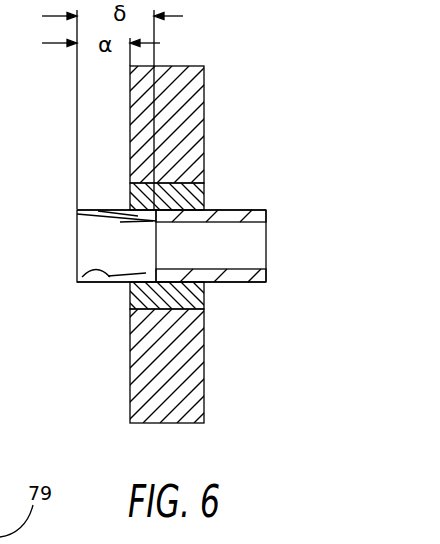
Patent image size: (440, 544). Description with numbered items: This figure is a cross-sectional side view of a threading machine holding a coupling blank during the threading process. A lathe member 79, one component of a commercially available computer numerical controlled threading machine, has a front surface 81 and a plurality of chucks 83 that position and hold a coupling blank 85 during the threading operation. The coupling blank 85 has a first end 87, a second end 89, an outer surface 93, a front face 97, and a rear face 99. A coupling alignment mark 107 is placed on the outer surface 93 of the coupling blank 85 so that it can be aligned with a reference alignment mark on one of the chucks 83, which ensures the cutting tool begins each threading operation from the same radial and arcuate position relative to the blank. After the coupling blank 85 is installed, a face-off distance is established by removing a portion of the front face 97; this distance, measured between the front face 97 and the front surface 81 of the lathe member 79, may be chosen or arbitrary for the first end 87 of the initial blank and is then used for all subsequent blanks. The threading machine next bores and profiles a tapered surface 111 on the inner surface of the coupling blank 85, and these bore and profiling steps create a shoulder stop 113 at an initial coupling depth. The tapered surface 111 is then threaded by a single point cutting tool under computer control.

The lathe member 79 is at (205, 80).
The front surface 81 is at (130, 408).
The chucks 83 is at (205, 302).
The coupling blank 85 is at (229, 283).
The first end 87 is at (95, 283).
The second end 89 is at (266, 207).
The outer surface 93 is at (240, 205).
The front face 97 is at (73, 210).
The rear face 99 is at (270, 222).
The coupling alignment mark 107 is at (12, 397).
The tapered surface 111 is at (83, 270).
The shoulder stop 113 is at (153, 221).